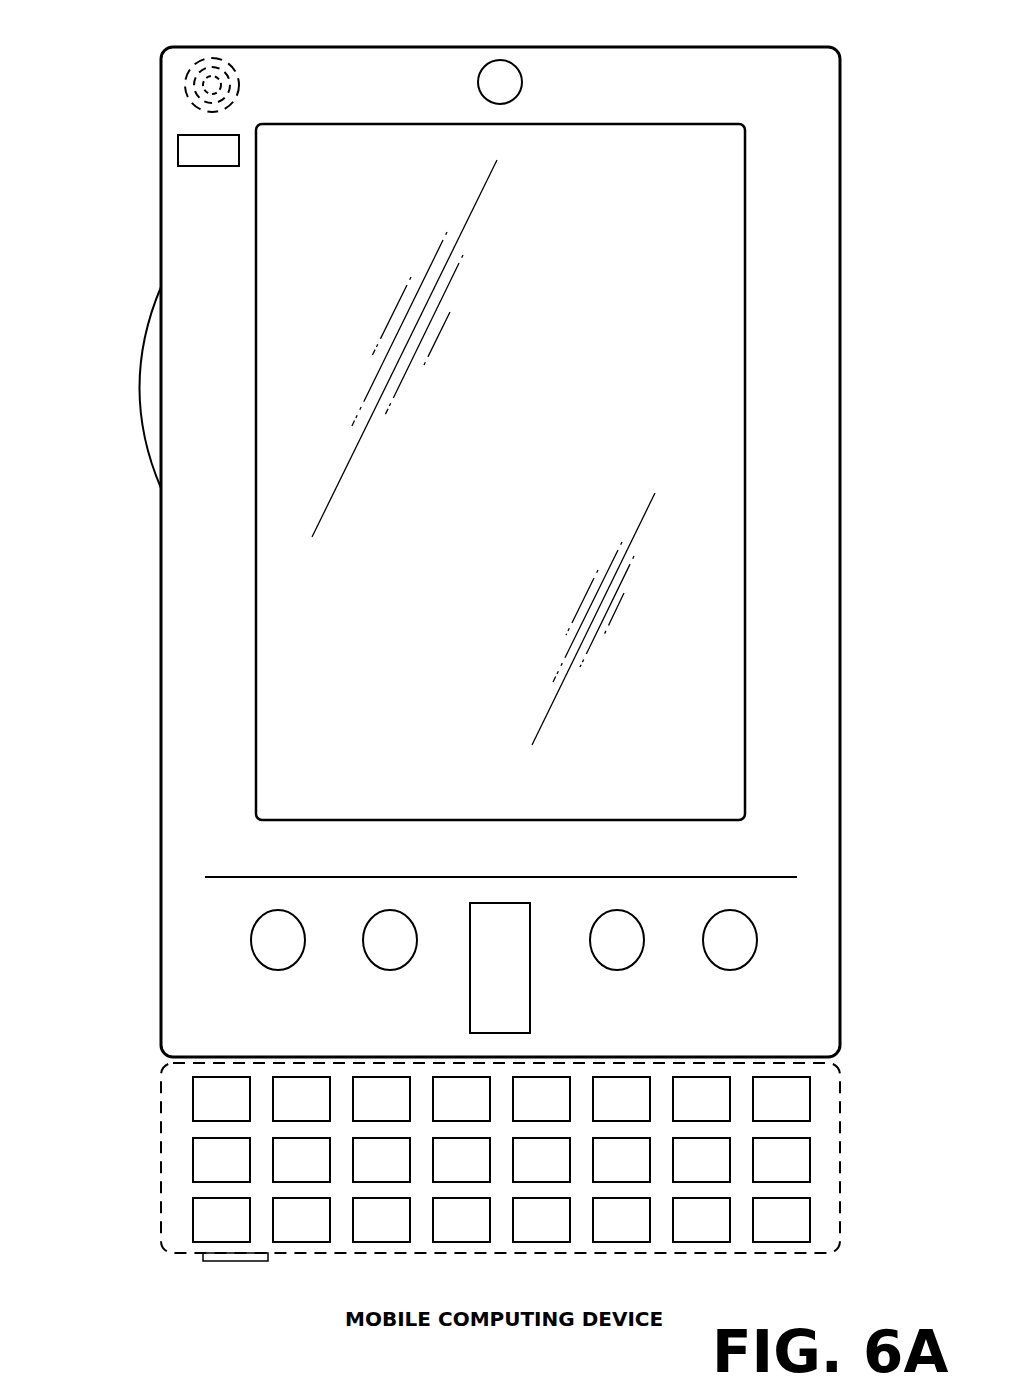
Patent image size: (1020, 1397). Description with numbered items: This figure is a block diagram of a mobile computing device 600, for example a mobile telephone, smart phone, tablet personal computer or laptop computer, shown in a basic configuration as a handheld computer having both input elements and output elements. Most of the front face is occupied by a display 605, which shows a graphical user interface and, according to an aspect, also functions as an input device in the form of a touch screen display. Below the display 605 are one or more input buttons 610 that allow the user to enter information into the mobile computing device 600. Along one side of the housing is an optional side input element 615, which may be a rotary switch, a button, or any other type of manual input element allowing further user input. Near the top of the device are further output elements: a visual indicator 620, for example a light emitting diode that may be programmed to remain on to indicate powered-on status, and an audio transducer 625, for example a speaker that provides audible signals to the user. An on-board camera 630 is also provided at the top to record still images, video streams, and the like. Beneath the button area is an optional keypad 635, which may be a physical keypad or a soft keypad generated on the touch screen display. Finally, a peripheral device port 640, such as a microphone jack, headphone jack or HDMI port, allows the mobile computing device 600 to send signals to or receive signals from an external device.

The mobile computing device 600 is at (803, 46).
The display 605 is at (280, 648).
The input buttons 610 is at (281, 970).
The side input element 615 is at (138, 388).
The visual indicator 620 is at (178, 150).
The audio transducer 625 is at (180, 87).
The on-board camera 630 is at (500, 61).
The keypad 635 is at (172, 1157).
The peripheral device port 640 is at (212, 1262).